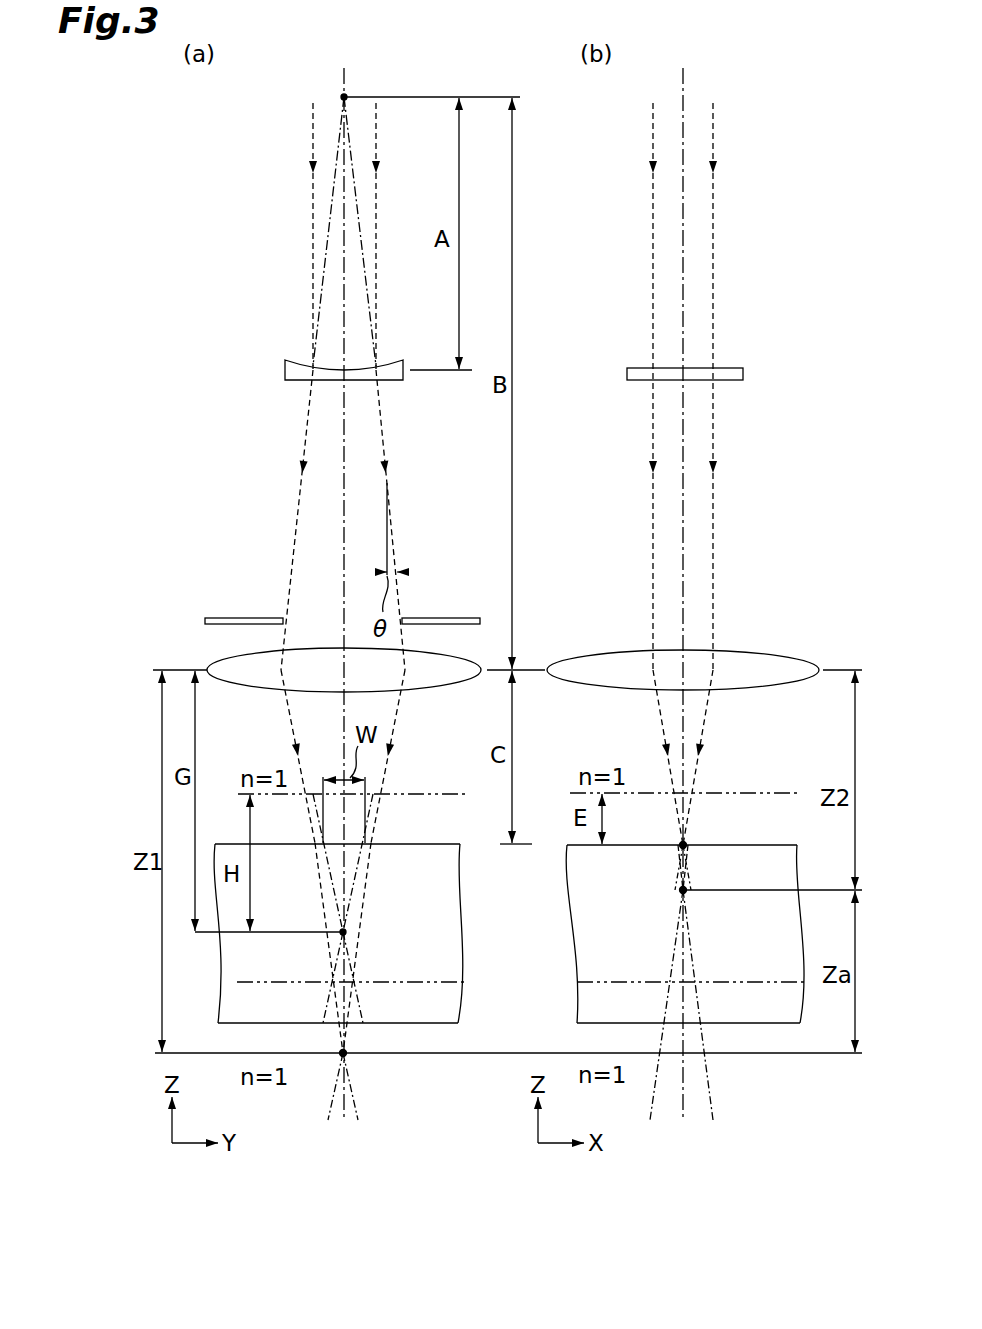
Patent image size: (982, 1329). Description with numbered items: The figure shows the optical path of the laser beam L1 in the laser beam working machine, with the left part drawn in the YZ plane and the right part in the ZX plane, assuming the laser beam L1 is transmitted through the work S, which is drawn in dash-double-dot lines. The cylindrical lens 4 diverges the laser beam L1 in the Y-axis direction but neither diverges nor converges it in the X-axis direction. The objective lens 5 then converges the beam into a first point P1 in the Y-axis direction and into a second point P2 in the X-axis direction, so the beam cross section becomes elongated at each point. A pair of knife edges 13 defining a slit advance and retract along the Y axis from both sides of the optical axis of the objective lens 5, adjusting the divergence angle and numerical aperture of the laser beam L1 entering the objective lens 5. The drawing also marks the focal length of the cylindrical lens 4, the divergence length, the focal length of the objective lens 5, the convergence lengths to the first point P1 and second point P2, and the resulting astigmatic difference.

The cylindrical lens 4 is at (285, 370).
The objective lens 5 is at (455, 656).
The knife edges 13 is at (233, 618).
The laser beam L1 is at (313, 186).
The work S is at (452, 843).
The first point P1 is at (346, 1056).
The second point P2 is at (686, 843).